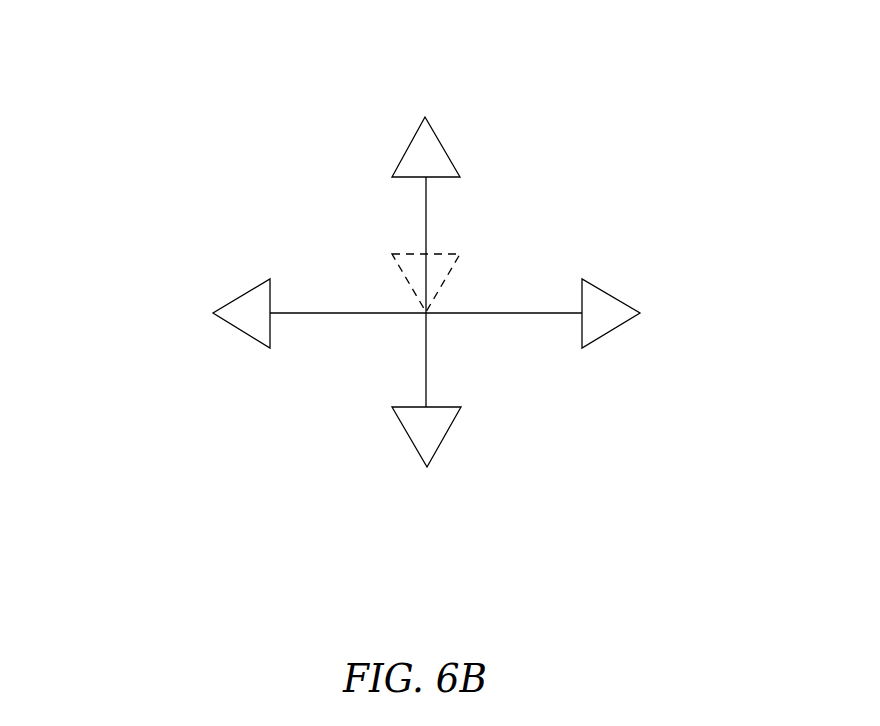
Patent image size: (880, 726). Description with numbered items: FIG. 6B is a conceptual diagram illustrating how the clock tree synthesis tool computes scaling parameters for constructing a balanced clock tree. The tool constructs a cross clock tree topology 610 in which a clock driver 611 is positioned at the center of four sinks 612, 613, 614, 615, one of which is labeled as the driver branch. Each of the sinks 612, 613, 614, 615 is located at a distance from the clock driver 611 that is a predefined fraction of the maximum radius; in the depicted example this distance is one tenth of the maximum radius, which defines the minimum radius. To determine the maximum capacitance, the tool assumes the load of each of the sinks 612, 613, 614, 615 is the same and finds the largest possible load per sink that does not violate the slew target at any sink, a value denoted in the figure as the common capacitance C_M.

The cross clock tree topology 610 is at (120, 157).
The clock driver 611 is at (460, 254).
The sink 612 is at (425, 117).
The sink 613 is at (640, 313).
The sink 614 is at (461, 407).
The sink 615 is at (213, 313).